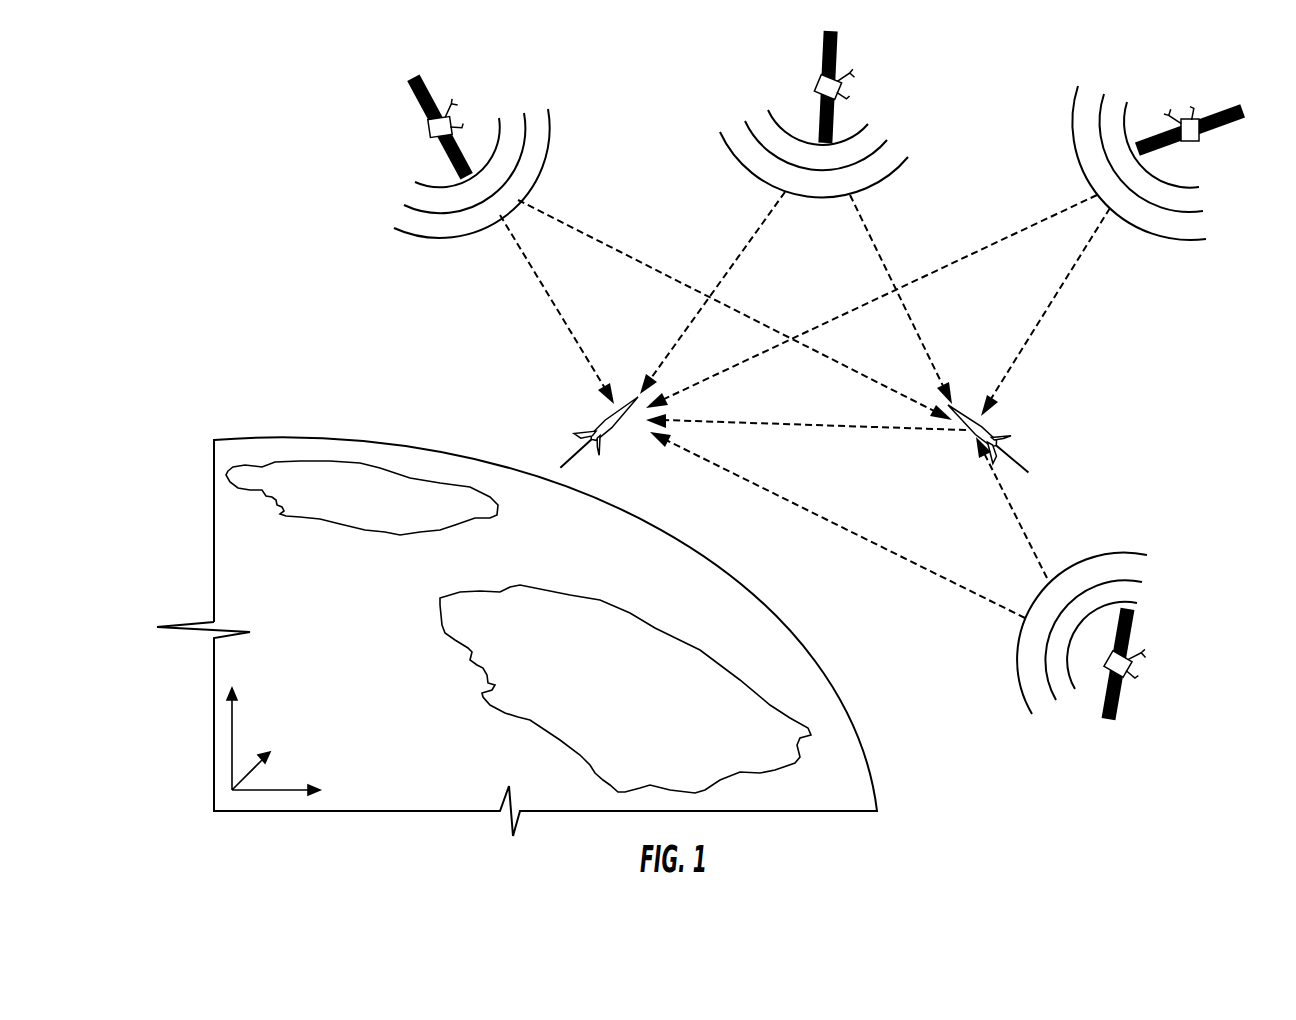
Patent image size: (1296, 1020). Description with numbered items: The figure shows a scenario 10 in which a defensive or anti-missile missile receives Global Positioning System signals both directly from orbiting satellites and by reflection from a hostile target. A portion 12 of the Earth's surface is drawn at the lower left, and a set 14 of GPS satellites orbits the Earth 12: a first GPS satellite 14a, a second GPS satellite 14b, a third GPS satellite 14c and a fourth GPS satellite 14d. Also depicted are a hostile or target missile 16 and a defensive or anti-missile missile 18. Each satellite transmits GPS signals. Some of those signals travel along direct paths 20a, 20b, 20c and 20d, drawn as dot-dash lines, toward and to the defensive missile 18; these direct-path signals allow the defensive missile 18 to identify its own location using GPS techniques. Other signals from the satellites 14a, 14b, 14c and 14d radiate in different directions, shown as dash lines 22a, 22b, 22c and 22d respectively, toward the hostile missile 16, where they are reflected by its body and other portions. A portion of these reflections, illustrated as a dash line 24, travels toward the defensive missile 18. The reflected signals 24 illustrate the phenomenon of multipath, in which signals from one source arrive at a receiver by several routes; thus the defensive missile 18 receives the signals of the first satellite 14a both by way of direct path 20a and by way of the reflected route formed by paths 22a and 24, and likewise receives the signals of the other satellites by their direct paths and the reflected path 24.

The scenario 10 is at (1064, 833).
The portion of the Earth's surface 12 is at (738, 586).
The set of GPS satellites 14 is at (596, 125).
The first GPS satellite 14a is at (437, 136).
The second GPS satellite 14b is at (824, 82).
The third GPS satellite 14c is at (1183, 133).
The fourth GPS satellite 14d is at (1128, 656).
The hostile missile 16 is at (1000, 433).
The defensive missile 18 is at (597, 433).
The direct path 20a is at (570, 334).
The direct path 20b is at (752, 233).
The direct path 20c is at (1007, 234).
The direct path 20d is at (958, 590).
The GPS signal path toward hostile missile 22a is at (604, 240).
The GPS signal path toward hostile missile 22b is at (877, 241).
The GPS signal path toward hostile missile 22c is at (1058, 300).
The GPS signal path toward hostile missile 22d is at (1038, 553).
The reflected signals 24 is at (858, 433).